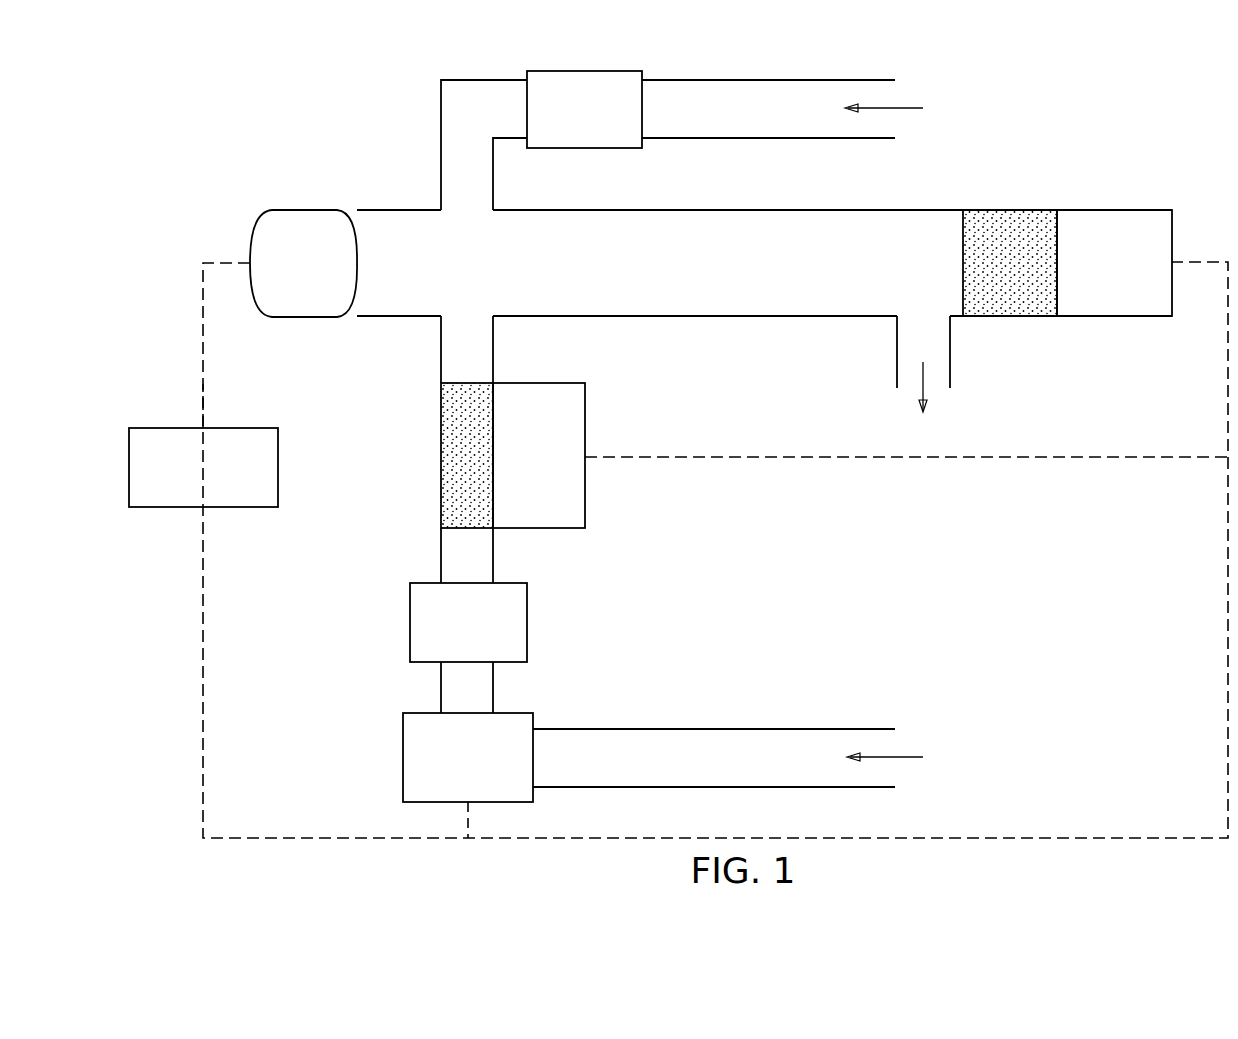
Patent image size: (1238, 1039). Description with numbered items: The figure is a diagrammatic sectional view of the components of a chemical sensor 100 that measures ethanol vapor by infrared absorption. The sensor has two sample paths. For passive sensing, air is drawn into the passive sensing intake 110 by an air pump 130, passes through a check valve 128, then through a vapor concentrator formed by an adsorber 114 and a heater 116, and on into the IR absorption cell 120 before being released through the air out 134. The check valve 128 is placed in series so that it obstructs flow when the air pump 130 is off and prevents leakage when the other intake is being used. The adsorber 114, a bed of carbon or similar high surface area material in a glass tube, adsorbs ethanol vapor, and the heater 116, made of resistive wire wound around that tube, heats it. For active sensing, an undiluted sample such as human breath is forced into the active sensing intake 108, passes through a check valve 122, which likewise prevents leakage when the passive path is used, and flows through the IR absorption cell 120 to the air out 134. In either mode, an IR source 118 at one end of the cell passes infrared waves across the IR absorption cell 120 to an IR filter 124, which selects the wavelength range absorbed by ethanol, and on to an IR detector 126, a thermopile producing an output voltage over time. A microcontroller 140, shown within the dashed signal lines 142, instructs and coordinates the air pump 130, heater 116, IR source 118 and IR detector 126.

The chemical sensor 100 is at (178, 179).
The active sensing intake 108 is at (880, 120).
The passive sensing intake 110 is at (886, 748).
The adsorber 114 is at (458, 383).
The heater 116 is at (578, 383).
The IR source 118 is at (294, 210).
The IR absorption cell 120 is at (780, 210).
The check valve 122 is at (615, 148).
The IR filter 124 is at (1010, 210).
The IR detector 126 is at (1128, 210).
The check valve 128 is at (420, 583).
The air pump 130 is at (420, 713).
The air out 134 is at (909, 395).
The microcontroller 140 is at (252, 428).
The signal lines 142 is at (203, 770).